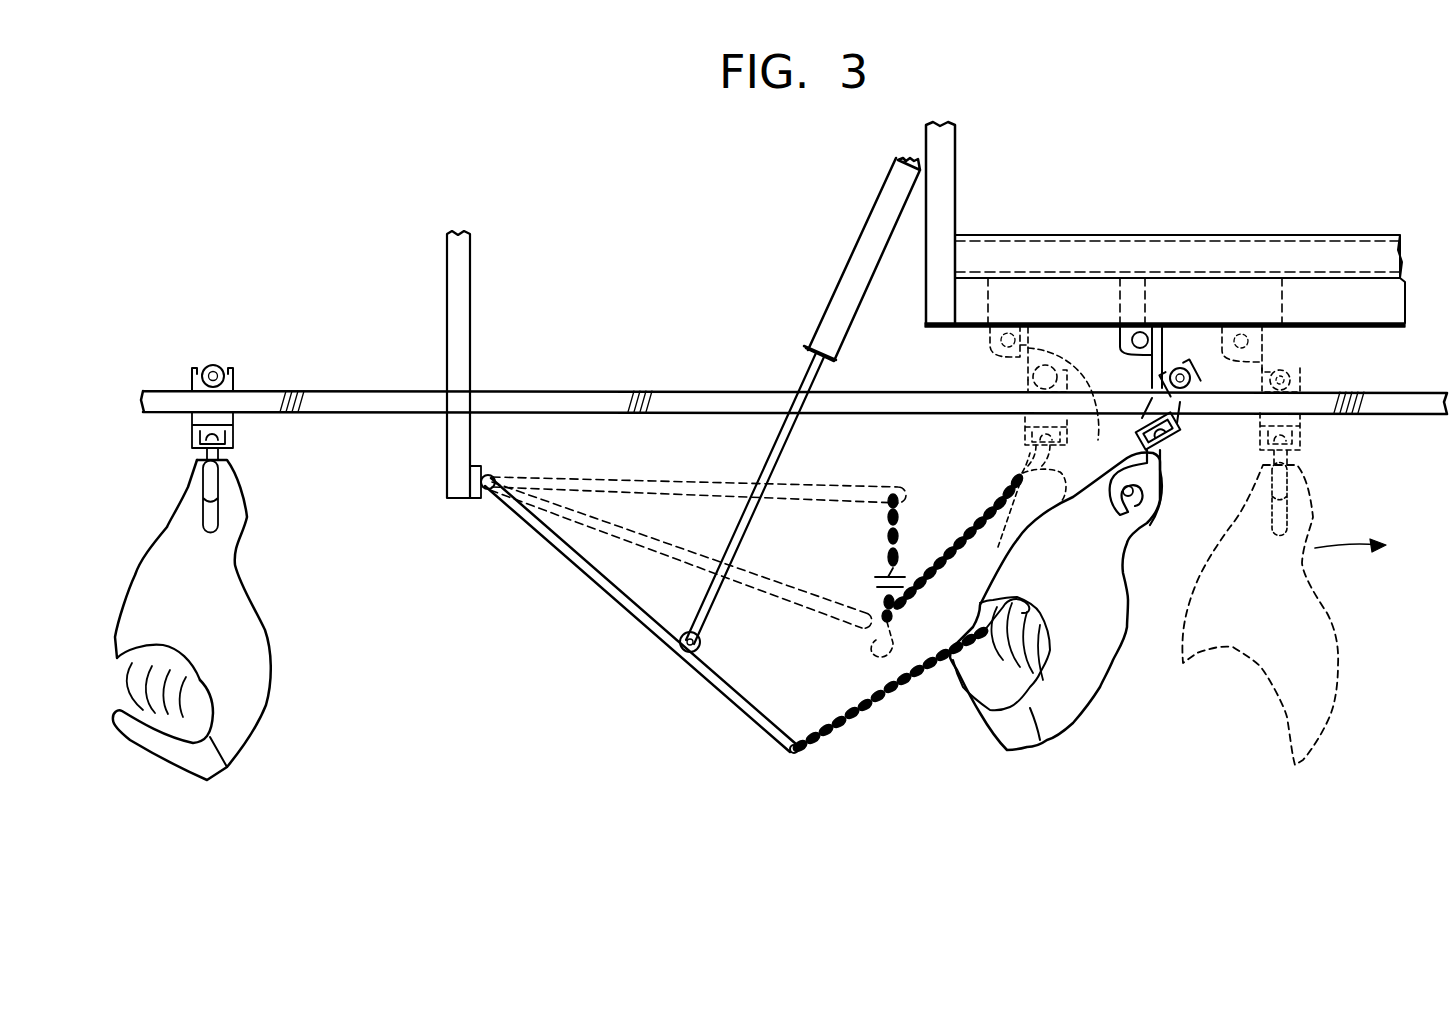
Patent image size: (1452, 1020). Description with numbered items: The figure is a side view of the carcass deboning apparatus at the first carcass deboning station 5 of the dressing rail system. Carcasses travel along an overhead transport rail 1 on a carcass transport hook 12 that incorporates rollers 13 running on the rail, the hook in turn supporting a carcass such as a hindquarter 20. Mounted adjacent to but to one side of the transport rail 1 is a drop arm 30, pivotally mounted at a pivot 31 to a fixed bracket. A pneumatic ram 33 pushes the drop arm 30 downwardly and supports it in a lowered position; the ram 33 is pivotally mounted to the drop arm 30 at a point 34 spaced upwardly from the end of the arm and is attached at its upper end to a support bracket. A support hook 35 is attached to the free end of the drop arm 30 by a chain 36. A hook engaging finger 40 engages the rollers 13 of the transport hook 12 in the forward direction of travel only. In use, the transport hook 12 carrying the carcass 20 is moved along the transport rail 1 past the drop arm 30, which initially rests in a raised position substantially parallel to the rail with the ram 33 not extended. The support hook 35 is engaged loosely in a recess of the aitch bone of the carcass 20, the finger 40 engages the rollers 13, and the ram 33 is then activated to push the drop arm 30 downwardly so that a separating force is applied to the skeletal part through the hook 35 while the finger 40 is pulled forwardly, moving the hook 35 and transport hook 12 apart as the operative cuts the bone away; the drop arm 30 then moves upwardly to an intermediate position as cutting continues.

The transport rail 1 is at (357, 394).
The first carcass deboning station 5 is at (734, 242).
The carcass transport hook 12 is at (230, 449).
The rollers 13 is at (213, 365).
The hindquarter 20 is at (243, 608).
The drop arm 30 is at (602, 600).
The pivot 31 is at (488, 498).
The pneumatic ram 33 is at (836, 299).
The pivot point 34 is at (688, 658).
The support hook 35 is at (874, 663).
The chain 36 is at (862, 735).
The hook engaging finger 40 is at (1160, 353).